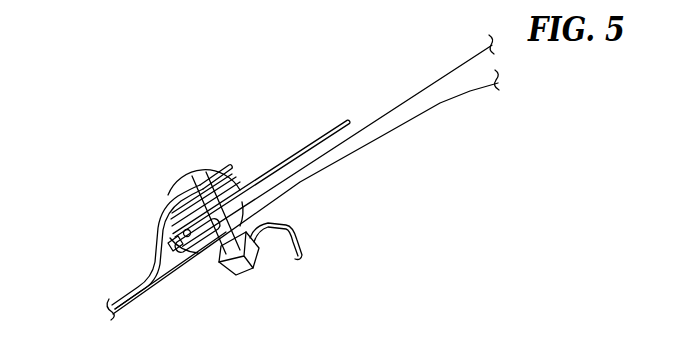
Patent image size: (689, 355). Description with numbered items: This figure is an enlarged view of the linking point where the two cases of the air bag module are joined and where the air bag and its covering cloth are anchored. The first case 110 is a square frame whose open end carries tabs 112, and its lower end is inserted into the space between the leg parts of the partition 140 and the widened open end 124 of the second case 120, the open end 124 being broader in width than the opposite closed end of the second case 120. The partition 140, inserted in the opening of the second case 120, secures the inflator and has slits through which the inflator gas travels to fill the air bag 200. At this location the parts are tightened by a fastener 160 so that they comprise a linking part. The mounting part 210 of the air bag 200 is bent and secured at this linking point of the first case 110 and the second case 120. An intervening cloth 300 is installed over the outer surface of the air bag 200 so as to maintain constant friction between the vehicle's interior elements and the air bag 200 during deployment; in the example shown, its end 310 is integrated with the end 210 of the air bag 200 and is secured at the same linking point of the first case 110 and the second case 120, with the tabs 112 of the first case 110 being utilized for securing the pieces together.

The first case 110 is at (271, 170).
The tabs 112 is at (195, 270).
The second case 120 is at (116, 304).
The open end of the second case 124 is at (155, 225).
The partition 140 is at (293, 233).
The fastener 160 is at (194, 173).
The air bag 200 is at (446, 106).
The mounting part of the air bag 210 is at (183, 193).
The intervening cloth 300 is at (436, 82).
The end of the intervening cloth 310 is at (231, 160).